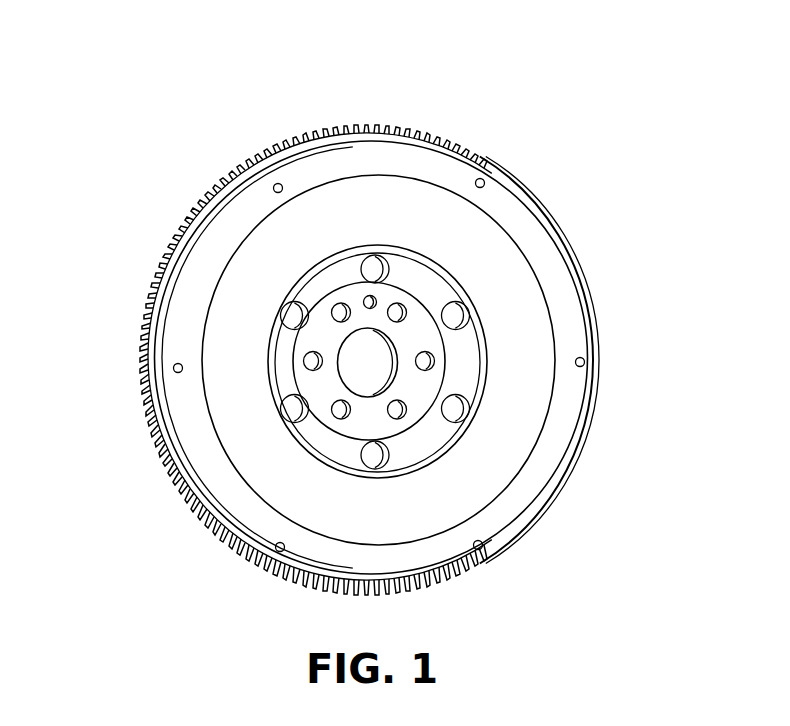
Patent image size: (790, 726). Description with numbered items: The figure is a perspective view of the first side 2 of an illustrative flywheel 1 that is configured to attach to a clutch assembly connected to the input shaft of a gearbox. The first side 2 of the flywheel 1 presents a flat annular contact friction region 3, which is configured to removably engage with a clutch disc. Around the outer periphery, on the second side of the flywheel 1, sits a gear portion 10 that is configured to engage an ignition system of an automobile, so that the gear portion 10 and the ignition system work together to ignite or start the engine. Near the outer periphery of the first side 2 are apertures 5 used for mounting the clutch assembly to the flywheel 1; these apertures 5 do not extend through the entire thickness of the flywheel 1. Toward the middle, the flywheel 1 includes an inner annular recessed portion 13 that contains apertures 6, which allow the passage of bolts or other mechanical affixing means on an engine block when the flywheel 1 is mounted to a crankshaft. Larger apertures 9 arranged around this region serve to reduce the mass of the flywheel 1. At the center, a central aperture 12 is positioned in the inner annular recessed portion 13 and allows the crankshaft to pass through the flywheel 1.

The flywheel 1 is at (548, 140).
The first side 2 is at (550, 247).
The flat annular contact friction region 3 is at (527, 425).
The apertures 5 is at (280, 184).
The apertures 6 is at (415, 422).
The apertures 9 is at (296, 412).
The gear portion 10 is at (174, 213).
The central aperture 12 is at (376, 352).
The inner annular recessed portion 13 is at (434, 377).